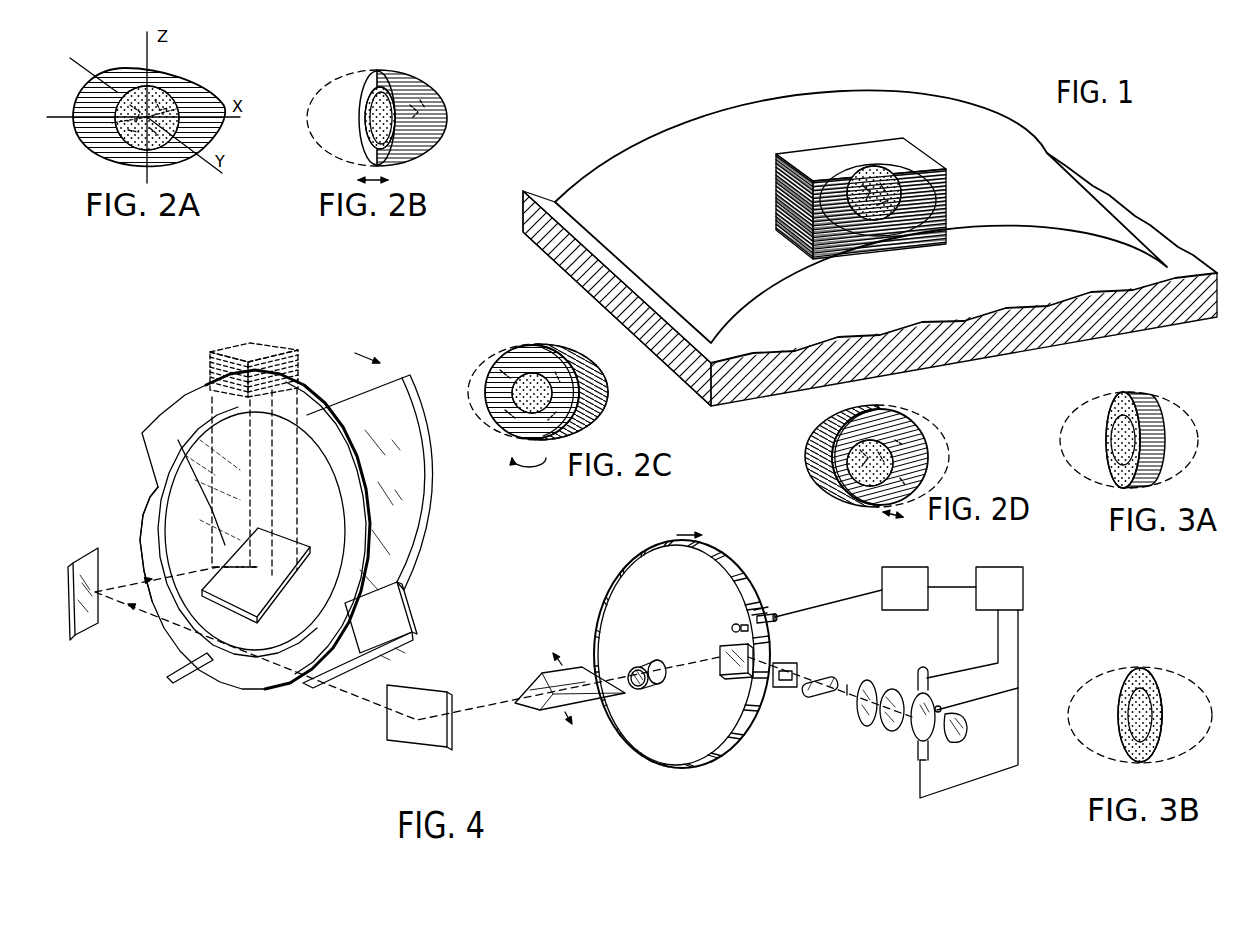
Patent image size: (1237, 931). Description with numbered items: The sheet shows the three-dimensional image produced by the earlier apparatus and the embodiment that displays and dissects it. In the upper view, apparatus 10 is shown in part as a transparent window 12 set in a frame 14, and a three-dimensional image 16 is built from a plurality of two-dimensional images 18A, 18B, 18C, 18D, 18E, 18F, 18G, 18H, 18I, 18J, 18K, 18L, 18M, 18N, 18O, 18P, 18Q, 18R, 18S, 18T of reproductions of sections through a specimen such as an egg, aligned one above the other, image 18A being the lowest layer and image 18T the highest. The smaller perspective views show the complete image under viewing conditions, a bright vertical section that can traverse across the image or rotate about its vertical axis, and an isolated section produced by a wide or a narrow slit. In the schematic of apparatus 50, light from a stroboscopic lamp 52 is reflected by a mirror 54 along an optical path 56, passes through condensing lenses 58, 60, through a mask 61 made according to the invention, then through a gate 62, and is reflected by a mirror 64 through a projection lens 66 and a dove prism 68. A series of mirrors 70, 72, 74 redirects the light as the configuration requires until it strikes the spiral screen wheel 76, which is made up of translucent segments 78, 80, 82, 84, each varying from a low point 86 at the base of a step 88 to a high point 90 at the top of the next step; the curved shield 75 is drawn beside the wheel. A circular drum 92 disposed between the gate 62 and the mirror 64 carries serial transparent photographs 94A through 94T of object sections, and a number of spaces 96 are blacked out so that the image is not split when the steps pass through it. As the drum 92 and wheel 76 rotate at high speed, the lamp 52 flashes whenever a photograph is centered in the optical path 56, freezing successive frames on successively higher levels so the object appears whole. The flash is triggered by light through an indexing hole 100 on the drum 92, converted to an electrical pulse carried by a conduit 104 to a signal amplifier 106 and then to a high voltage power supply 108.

In FIG. 1, the apparatus 10 is at (631, 134).
In FIG. 1, the transparent window 12 is at (954, 105).
In FIG. 1, the frame 14 is at (1105, 187).
In FIG. 1, the three-dimensional image 16 is at (860, 136).
In FIG. 4, the three-dimensional image 16 is at (242, 350).
In FIG. 1, the two-dimensional image 18A is at (790, 239).
In FIG. 1, the two-dimensional image 18B is at (790, 235).
In FIG. 1, the two-dimensional image 18C is at (790, 231).
In FIG. 1, the two-dimensional image 18D is at (946, 231).
In FIG. 1, the two-dimensional image 18E is at (946, 227).
In FIG. 1, the two-dimensional image 18F is at (946, 223).
In FIG. 1, the two-dimensional image 18G is at (790, 216).
In FIG. 1, the two-dimensional image 18H is at (790, 212).
In FIG. 1, the two-dimensional image 18I is at (790, 208).
In FIG. 1, the two-dimensional image 18J is at (790, 205).
In FIG. 1, the two-dimensional image 18K is at (790, 201).
In FIG. 1, the two-dimensional image 18L is at (790, 197).
In FIG. 1, the two-dimensional image 18M is at (790, 193).
In FIG. 1, the two-dimensional image 18N is at (946, 193).
In FIG. 1, the two-dimensional image 18O is at (946, 190).
In FIG. 1, the two-dimensional image 18P is at (946, 186).
In FIG. 1, the two-dimensional image 18Q is at (946, 182).
In FIG. 1, the two-dimensional image 18R is at (946, 178).
In FIG. 1, the two-dimensional image 18S is at (930, 176).
In FIG. 1, the two-dimensional image 18T is at (920, 173).
In FIG. 4, the apparatus 50 is at (371, 723).
In FIG. 4, the lamp 52 is at (930, 755).
In FIG. 4, the mirror 54 is at (967, 733).
In FIG. 4, the optical path 56 is at (847, 692).
In FIG. 4, the condensing lens 58 is at (885, 730).
In FIG. 4, the condensing lens 60 is at (860, 722).
In FIG. 4, the mask 61 is at (807, 698).
In FIG. 4, the gate 62 is at (785, 687).
In FIG. 4, the mirror 64 is at (723, 673).
In FIG. 4, the projection lens 66 is at (652, 665).
In FIG. 4, the dove prism 68 is at (552, 710).
In FIG. 4, the mirror 70 is at (400, 745).
In FIG. 4, the mirror 72 is at (77, 557).
In FIG. 4, the mirror 74 is at (277, 593).
In FIG. 4, the curved shield 75 is at (410, 547).
In FIG. 4, the spiral screen wheel 76 is at (434, 496).
In FIG. 4, the segment 78 is at (176, 405).
In FIG. 4, the segment 80 is at (420, 408).
In FIG. 4, the segment 82 is at (262, 690).
In FIG. 4, the segment 84 is at (143, 537).
In FIG. 4, the low point 86 is at (342, 602).
In FIG. 4, the step 88 is at (352, 638).
In FIG. 4, the high point 90 is at (352, 657).
In FIG. 4, the circular drum 92 is at (747, 578).
In FIG. 4, the transparent photograph 94A is at (757, 603).
In FIG. 4, the transparent photograph 94T is at (760, 611).
In FIG. 4, the blacked-out space 96 is at (597, 610).
In FIG. 4, the indexing hole 100 is at (735, 618).
In FIG. 4, the conduit 104 is at (817, 605).
In FIG. 4, the signal amplifier 106 is at (895, 567).
In FIG. 4, the high voltage power supply 108 is at (1003, 567).